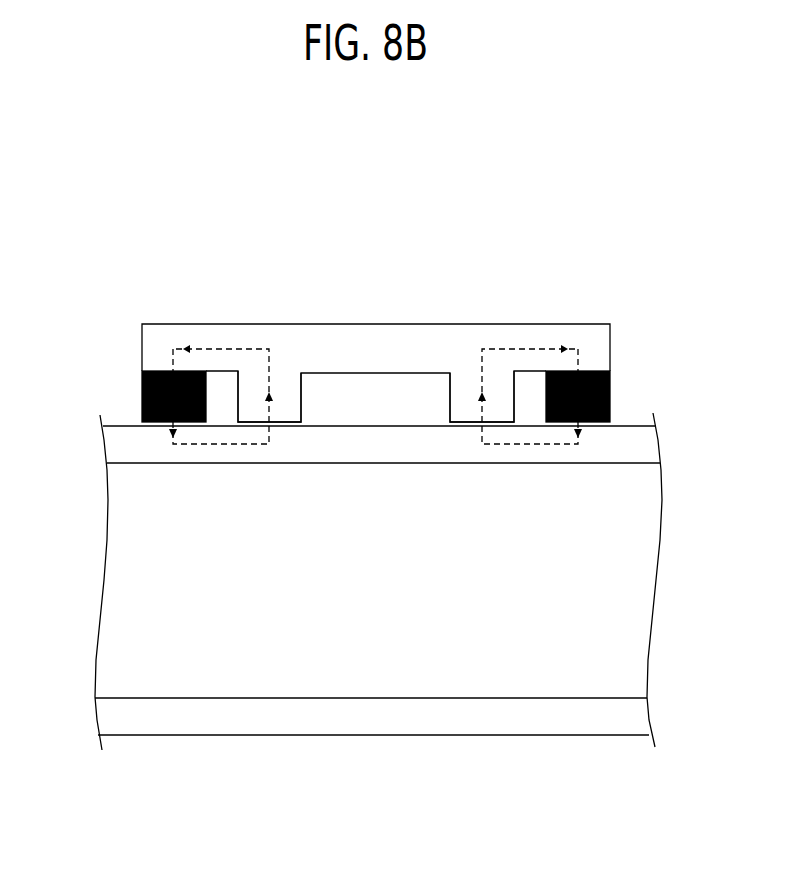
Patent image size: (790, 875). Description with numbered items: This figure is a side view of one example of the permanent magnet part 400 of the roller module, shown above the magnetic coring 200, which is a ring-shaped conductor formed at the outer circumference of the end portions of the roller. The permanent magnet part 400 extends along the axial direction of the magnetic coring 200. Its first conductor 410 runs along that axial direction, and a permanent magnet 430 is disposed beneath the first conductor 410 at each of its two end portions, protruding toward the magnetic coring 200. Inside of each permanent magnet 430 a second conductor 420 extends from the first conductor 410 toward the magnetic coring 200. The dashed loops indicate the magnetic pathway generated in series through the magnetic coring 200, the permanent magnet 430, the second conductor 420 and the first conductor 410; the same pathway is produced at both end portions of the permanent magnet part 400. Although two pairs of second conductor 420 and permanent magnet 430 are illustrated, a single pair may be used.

The magnetic coring 200 is at (115, 448).
The permanent magnet part 400 is at (379, 331).
The first conductor 410 is at (398, 343).
The second conductor 420 is at (283, 393).
The permanent magnet 430 is at (142, 393).